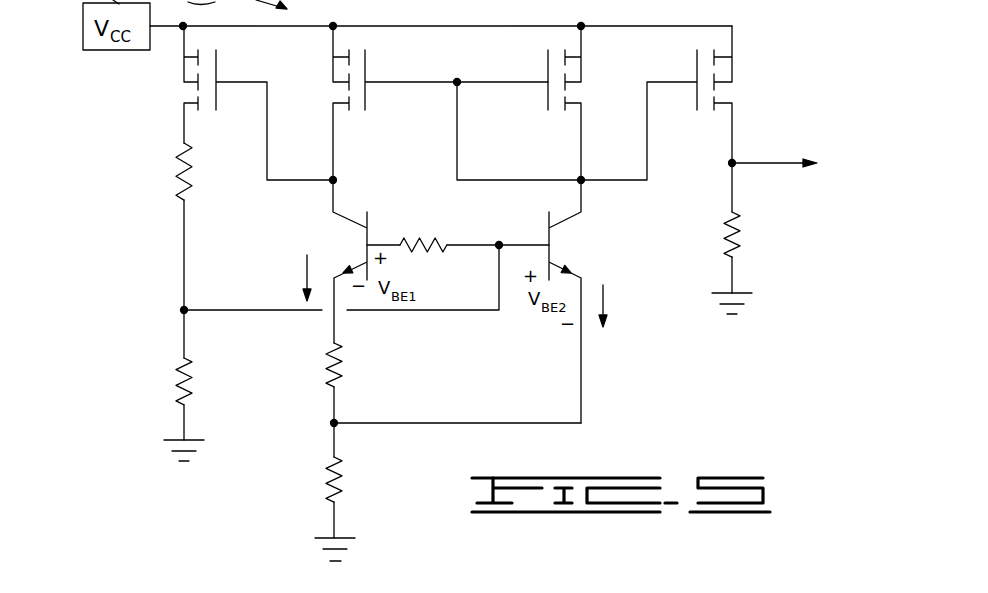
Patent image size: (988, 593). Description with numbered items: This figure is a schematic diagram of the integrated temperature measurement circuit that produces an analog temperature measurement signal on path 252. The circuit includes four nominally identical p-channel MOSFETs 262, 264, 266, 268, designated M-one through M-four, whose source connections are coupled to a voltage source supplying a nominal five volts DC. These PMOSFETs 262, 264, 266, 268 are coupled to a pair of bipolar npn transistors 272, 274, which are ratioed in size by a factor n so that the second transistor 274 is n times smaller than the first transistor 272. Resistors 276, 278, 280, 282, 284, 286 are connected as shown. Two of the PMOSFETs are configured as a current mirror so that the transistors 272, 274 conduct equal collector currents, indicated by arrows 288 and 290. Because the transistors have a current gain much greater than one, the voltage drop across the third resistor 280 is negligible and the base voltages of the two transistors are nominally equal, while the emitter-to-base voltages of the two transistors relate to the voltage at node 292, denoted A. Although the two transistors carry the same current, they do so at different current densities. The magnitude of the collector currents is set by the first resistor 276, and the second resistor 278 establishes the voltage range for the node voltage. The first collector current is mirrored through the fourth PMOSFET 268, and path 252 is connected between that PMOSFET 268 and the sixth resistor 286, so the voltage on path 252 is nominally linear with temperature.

The path 252 is at (765, 160).
The PMOSFET 262 is at (217, 64).
The PMOSFET 264 is at (366, 63).
The PMOSFET 266 is at (582, 66).
The PMOSFET 268 is at (734, 65).
The bipolar npn transistor 272 is at (367, 222).
The bipolar npn transistor 274 is at (549, 222).
The resistor 276 is at (340, 356).
The resistor 278 is at (340, 470).
The resistor 280 is at (417, 240).
The resistor 282 is at (180, 173).
The resistor 284 is at (180, 370).
The resistor 286 is at (740, 232).
The arrow 288 is at (307, 272).
The arrow 290 is at (604, 297).
The node 292 is at (183, 308).